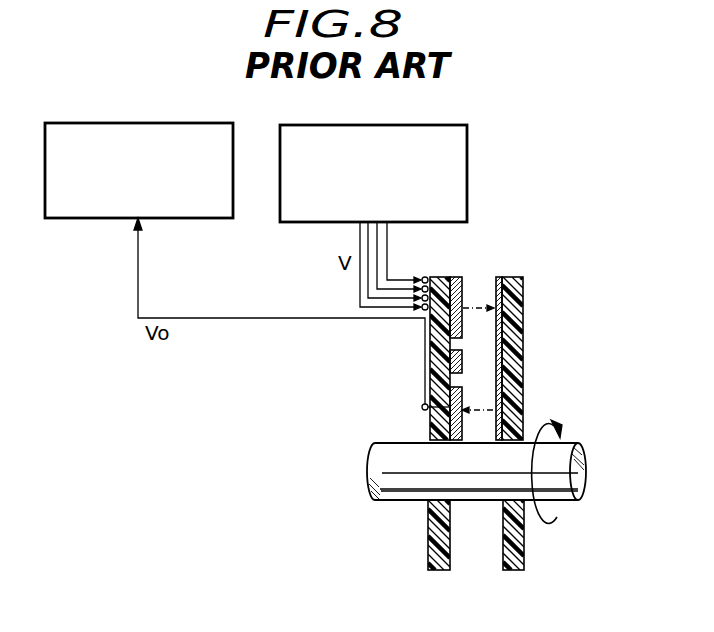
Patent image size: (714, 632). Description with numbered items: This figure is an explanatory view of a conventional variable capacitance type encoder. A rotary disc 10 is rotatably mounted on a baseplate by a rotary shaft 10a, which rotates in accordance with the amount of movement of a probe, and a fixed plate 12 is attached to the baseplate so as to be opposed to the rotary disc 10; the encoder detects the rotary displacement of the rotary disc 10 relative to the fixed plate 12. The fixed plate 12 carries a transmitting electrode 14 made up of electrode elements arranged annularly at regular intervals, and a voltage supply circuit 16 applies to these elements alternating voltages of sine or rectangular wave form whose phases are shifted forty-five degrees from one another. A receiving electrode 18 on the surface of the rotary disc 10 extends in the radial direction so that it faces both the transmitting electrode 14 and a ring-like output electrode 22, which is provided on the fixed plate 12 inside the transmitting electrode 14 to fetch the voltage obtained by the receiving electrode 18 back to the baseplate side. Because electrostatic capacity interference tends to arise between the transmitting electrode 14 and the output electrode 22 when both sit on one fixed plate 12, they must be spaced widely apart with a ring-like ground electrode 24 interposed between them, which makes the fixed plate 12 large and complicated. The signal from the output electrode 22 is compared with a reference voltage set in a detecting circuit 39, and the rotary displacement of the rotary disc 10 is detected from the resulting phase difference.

The detecting circuit 39 is at (97, 123).
The voltage supply circuit 16 is at (467, 136).
The transmitting electrode 14 is at (456, 277).
The receiving electrode 18 is at (498, 277).
The ground electrode 24 is at (462, 353).
The output electrode 22 is at (461, 405).
The rotary disc 10 is at (511, 568).
The rotary shaft 10a is at (392, 499).
The fixed plate 12 is at (437, 567).